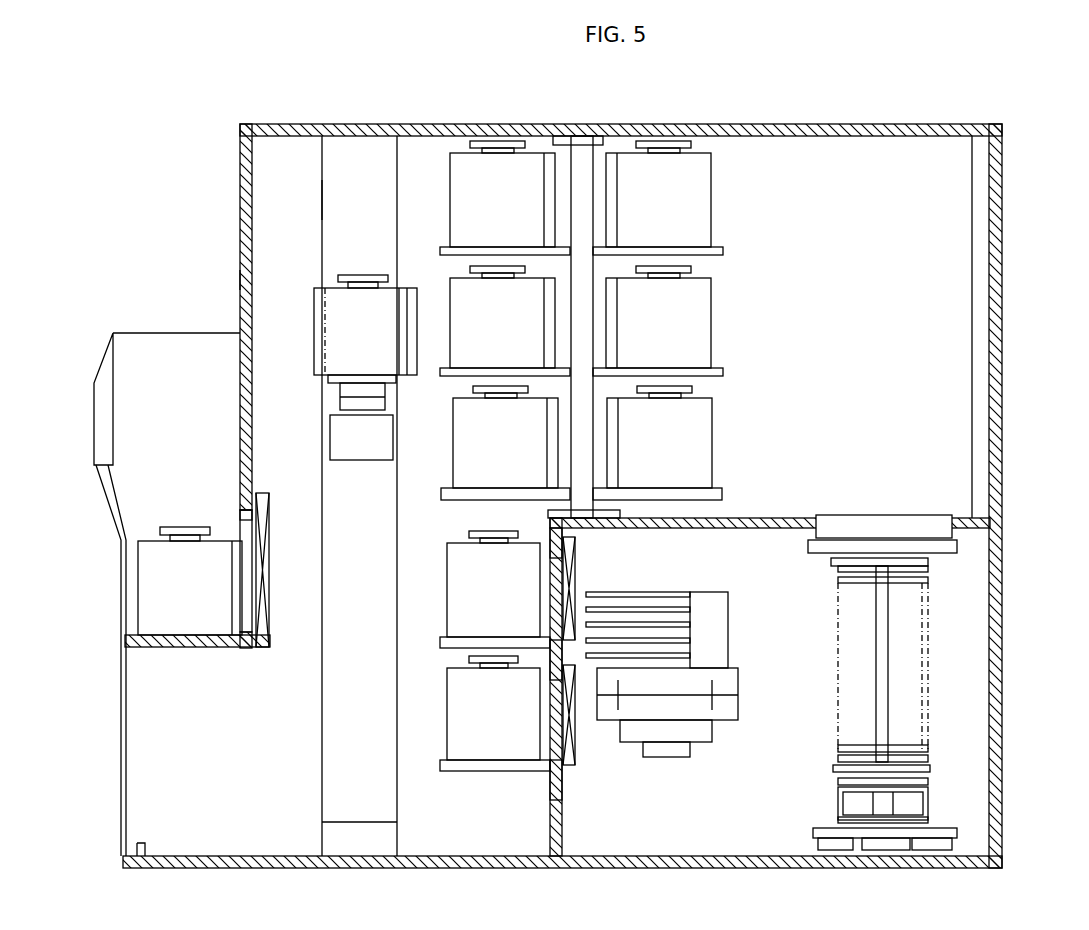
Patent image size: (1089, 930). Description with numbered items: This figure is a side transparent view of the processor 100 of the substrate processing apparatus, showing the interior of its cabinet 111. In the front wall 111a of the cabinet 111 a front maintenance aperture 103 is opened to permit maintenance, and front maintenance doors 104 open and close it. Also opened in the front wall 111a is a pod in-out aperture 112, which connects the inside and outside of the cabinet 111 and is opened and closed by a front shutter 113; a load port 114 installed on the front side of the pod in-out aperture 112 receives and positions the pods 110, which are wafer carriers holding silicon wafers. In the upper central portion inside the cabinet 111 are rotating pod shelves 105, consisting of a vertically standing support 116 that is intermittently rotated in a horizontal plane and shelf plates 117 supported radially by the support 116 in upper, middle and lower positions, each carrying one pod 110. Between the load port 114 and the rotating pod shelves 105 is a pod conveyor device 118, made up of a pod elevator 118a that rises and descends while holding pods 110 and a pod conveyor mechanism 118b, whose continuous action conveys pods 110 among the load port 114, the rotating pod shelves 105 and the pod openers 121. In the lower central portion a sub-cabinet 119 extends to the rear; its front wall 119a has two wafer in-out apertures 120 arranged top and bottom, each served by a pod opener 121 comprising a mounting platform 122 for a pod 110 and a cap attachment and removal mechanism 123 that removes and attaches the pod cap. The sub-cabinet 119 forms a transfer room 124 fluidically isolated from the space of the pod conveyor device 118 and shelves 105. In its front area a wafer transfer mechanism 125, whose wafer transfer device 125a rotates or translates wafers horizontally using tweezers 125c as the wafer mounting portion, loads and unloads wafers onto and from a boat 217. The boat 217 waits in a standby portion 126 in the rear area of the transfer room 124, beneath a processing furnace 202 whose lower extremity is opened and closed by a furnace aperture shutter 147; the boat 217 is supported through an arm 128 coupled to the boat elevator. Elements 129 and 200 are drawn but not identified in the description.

The processor 100 is at (876, 77).
The front maintenance aperture 103 is at (121, 738).
The front maintenance door 104 is at (138, 856).
The rotating pod shelves 105 is at (587, 320).
The pod 110 is at (450, 173).
The cabinet 111 is at (455, 124).
The front wall 111a is at (240, 274).
The pod in-out aperture 112 is at (240, 516).
The front shutter 113 is at (269, 596).
The load port 114 is at (198, 636).
The support 116 is at (588, 150).
The shelf plate 117 is at (430, 272).
The pod conveyor device 118 is at (356, 128).
The pod elevator 118a is at (322, 201).
The pod conveyor mechanism 118b is at (336, 438).
The sub-cabinet 119 is at (752, 518).
The front wall of the sub-cabinet 119a is at (548, 835).
The wafer in-out aperture 120 is at (548, 550).
The pod opener 121 is at (468, 662).
The mounting platform 122 is at (446, 648).
The cap attachment and removal mechanism 123 is at (575, 560).
The transfer room 124 is at (677, 681).
The wafer transfer mechanism 125 is at (677, 690).
The wafer transfer device 125a is at (714, 592).
The tweezers 125c is at (602, 592).
The standby portion 126 is at (921, 684).
The arm 128 is at (813, 842).
The lower assembly 129 is at (824, 826).
The furnace aperture shutter 147 is at (990, 548).
The bars 200 is at (838, 750).
The processing furnace 202 is at (772, 302).
The boat 217 is at (930, 622).